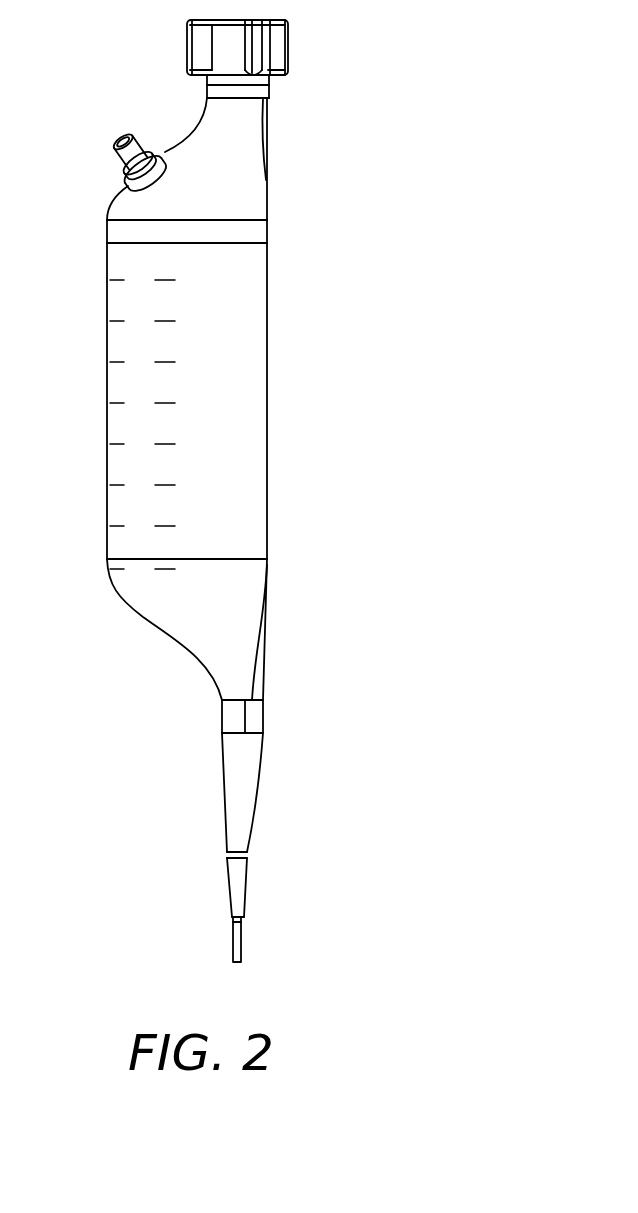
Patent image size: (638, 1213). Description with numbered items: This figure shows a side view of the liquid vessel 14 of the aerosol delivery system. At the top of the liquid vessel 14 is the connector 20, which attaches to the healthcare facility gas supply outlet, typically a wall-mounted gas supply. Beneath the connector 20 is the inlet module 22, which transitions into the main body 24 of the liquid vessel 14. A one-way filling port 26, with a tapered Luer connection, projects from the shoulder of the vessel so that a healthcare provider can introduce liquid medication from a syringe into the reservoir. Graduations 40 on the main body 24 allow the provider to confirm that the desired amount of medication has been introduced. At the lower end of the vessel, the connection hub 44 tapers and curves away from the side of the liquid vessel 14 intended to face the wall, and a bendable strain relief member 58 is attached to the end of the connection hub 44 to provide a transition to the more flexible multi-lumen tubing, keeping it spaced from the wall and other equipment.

The liquid vessel 14 is at (296, 392).
The connector 20 is at (289, 45).
The inlet module 22 is at (264, 153).
The main body 24 is at (262, 447).
The one-way filling port 26 is at (118, 140).
The graduations 40 is at (115, 322).
The connection hub 44 is at (228, 795).
The strain relief member 58 is at (240, 885).